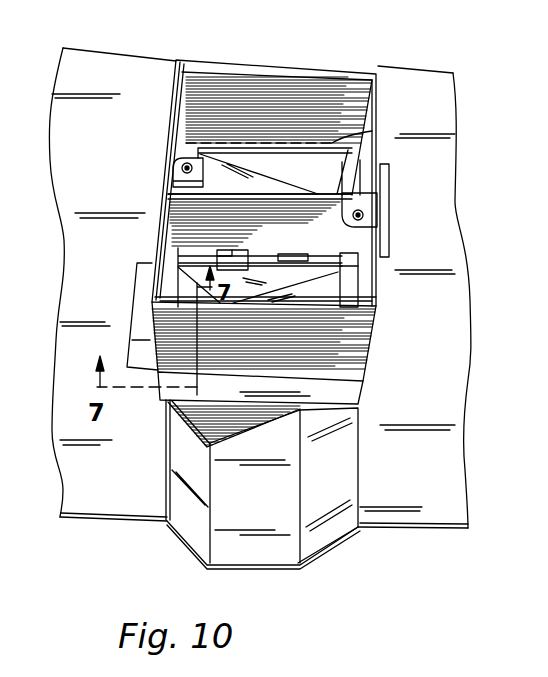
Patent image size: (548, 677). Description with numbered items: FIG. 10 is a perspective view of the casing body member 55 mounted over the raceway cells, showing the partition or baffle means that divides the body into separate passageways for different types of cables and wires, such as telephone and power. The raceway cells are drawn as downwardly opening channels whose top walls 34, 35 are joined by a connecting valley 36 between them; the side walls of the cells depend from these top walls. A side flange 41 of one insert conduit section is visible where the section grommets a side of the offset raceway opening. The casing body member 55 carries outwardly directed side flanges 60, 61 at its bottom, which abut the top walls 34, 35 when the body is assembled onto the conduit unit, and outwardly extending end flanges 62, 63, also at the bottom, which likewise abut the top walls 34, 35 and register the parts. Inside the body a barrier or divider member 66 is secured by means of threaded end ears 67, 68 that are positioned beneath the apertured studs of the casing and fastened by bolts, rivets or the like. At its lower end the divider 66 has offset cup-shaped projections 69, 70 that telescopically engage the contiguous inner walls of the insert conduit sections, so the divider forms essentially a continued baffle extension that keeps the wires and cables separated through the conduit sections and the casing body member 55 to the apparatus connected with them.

The raceway top wall 34 is at (118, 194).
The raceway top wall 35 is at (452, 320).
The connecting valley 36 is at (252, 553).
The side flange 41 is at (193, 424).
The casing body member 55 is at (350, 348).
The side flange 60 is at (137, 322).
The side flange 61 is at (390, 196).
The end flange 62 is at (347, 401).
The end flange 63 is at (372, 131).
The barrier or divider member 66 is at (190, 223).
The threaded end ear 67 is at (175, 157).
The threaded end ear 68 is at (377, 223).
The cup-shaped projection 69 is at (240, 258).
The cup-shaped projection 70 is at (290, 262).